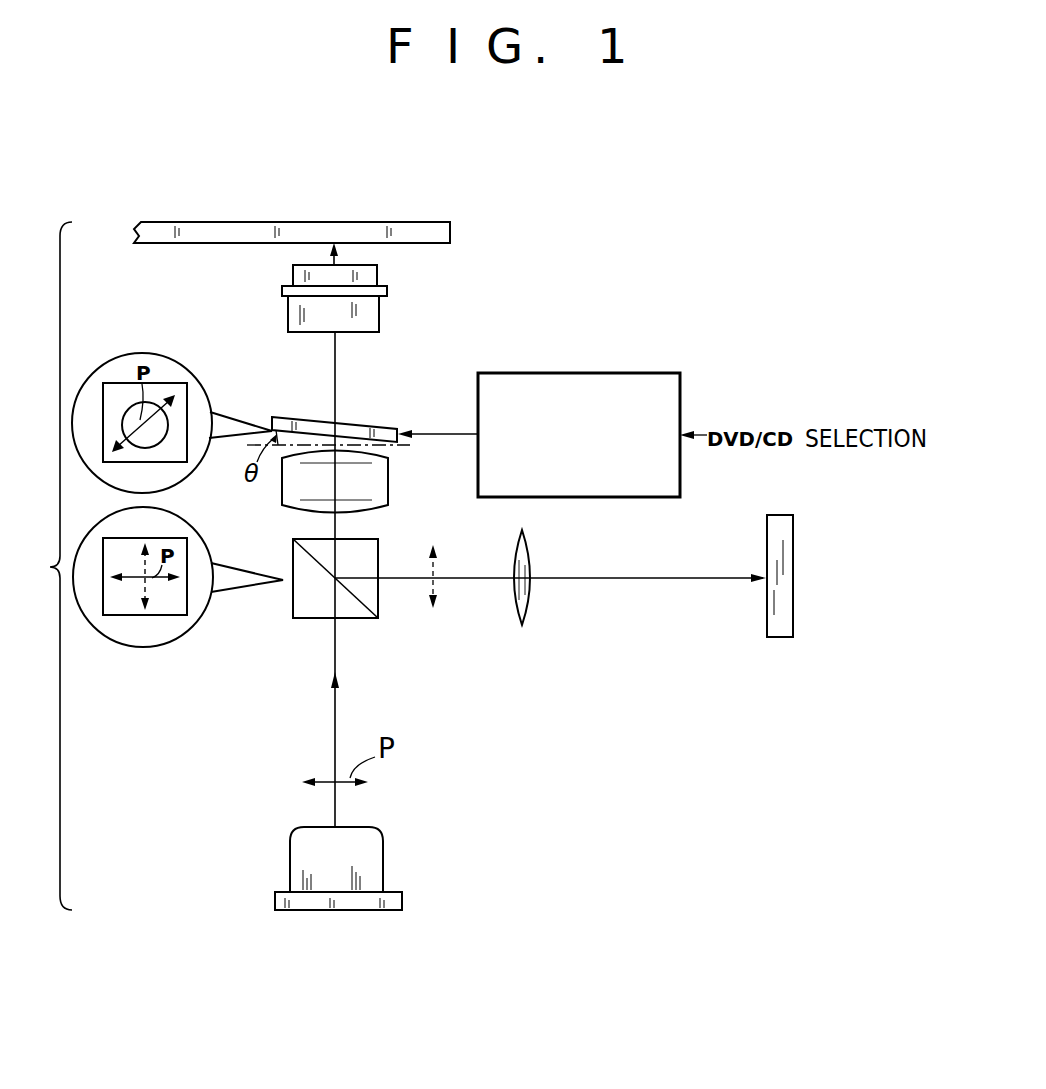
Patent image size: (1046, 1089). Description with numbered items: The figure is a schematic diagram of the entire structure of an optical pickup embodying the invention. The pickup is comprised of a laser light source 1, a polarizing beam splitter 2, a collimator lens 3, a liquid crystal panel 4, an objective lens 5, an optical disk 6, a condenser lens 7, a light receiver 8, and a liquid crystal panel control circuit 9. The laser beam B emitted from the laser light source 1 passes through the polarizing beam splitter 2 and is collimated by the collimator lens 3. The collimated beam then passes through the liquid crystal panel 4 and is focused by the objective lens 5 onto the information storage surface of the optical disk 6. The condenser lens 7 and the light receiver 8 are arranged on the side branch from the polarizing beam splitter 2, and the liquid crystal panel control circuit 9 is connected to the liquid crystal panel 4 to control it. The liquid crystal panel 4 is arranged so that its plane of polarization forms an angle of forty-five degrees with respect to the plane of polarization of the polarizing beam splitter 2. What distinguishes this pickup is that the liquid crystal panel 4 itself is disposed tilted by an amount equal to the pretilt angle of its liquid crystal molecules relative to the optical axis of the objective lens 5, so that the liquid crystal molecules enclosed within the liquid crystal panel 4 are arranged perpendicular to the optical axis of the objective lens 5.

The laser light source 1 is at (358, 868).
The polarizing beam splitter 2 is at (314, 606).
The collimator lens 3 is at (357, 482).
The liquid crystal panel 4 is at (328, 406).
The objective lens 5 is at (362, 298).
The optical disk 6 is at (292, 194).
The condenser lens 7 is at (544, 602).
The light receiver 8 is at (806, 576).
The liquid crystal panel control circuit 9 is at (579, 409).
The laser beam B is at (301, 727).